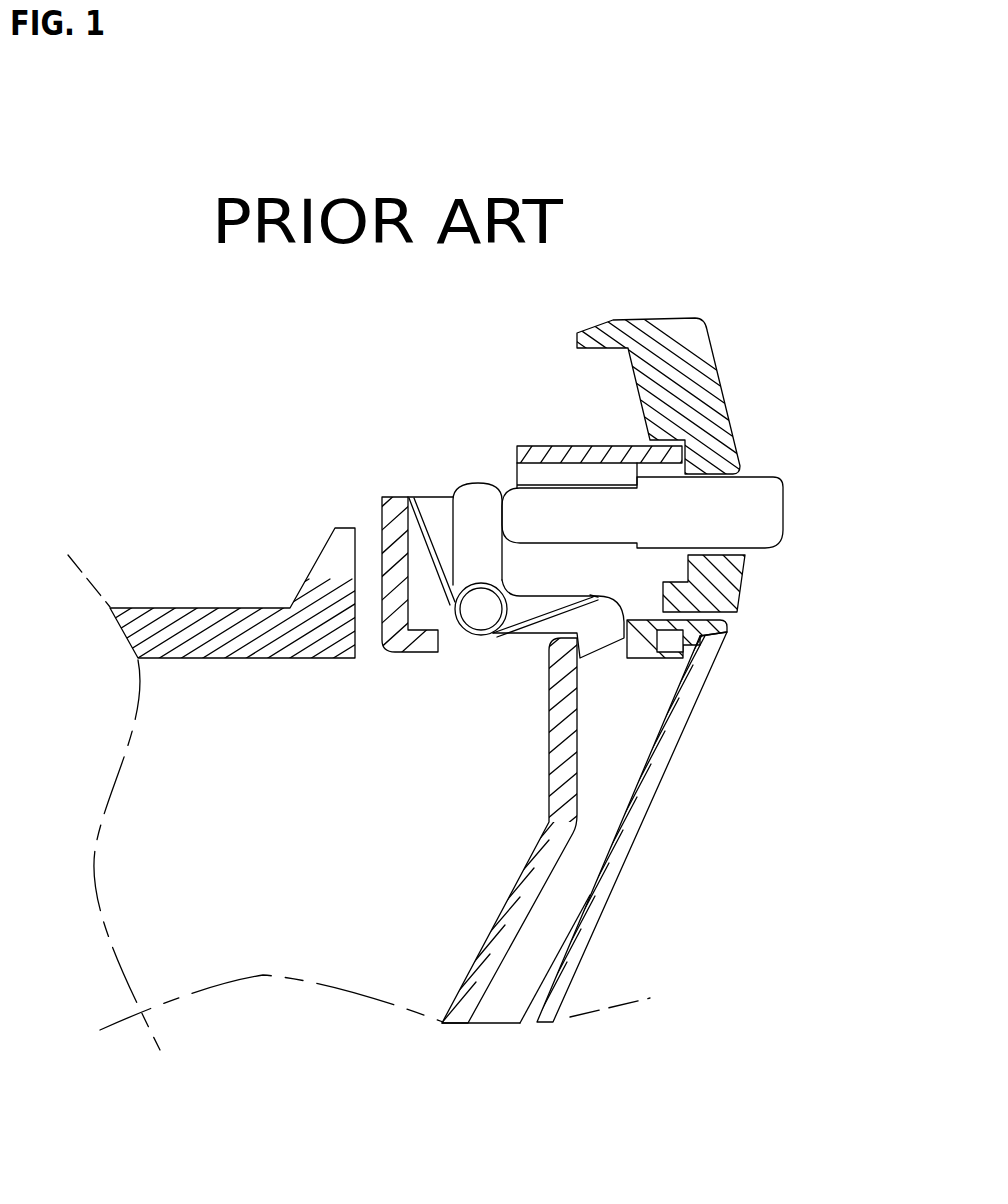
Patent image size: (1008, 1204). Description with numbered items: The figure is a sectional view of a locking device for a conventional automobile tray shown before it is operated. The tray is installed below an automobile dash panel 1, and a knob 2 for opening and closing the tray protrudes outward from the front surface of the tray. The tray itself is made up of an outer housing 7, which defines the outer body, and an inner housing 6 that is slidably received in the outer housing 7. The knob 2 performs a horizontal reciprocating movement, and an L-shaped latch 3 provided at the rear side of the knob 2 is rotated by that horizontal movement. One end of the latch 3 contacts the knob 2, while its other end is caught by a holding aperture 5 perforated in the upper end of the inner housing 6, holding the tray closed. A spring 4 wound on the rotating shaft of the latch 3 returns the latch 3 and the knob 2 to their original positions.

The automobile dash panel 1 is at (692, 388).
The knob 2 is at (760, 513).
The L-shaped latch 3 is at (478, 508).
The spring 4 is at (425, 562).
The holding aperture 5 is at (602, 677).
The inner housing 6 is at (615, 853).
The outer housing 7 is at (198, 632).